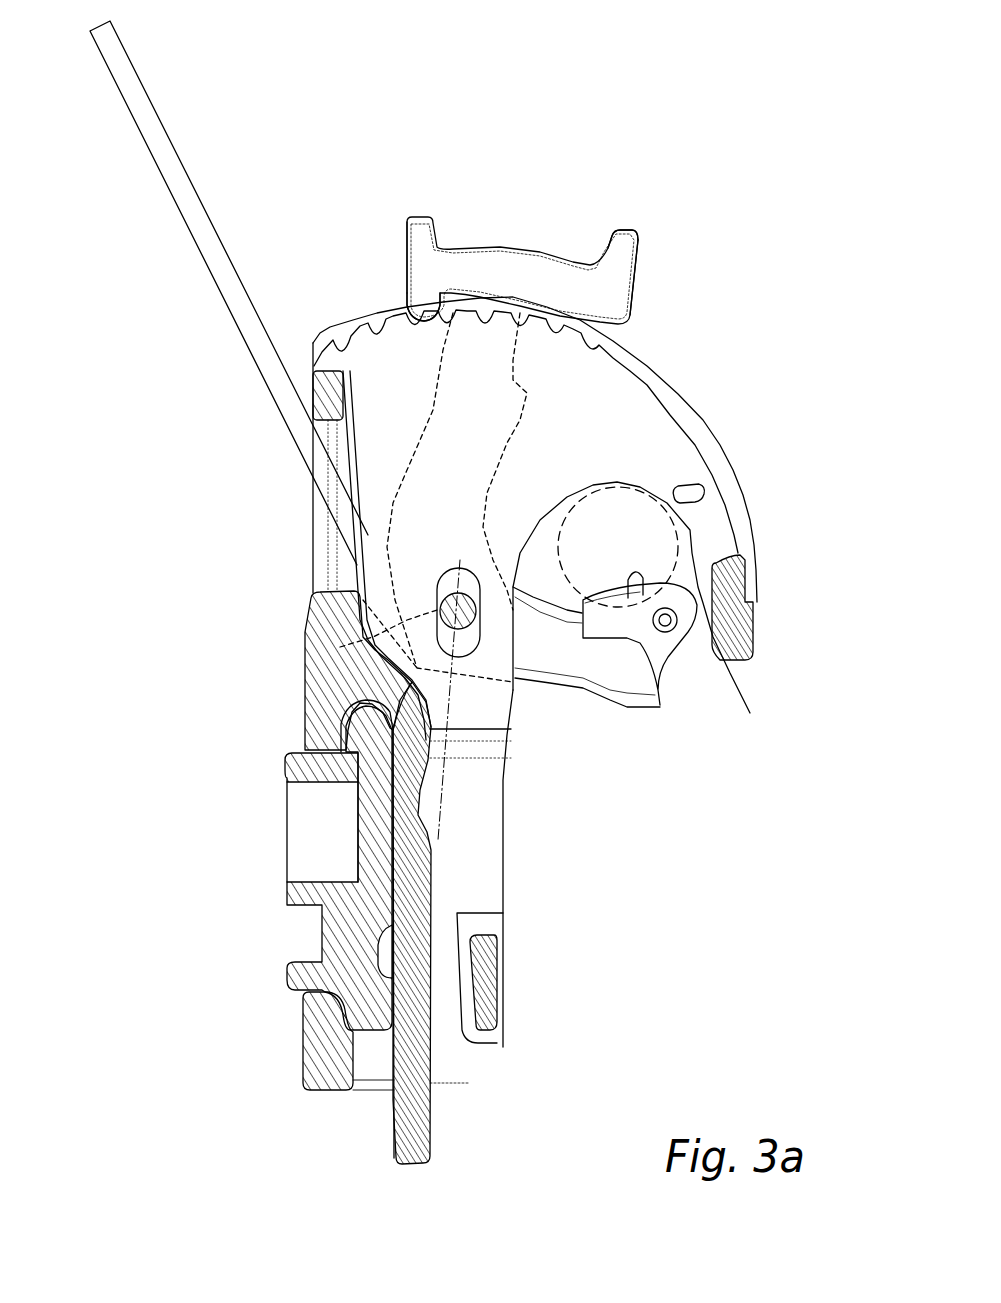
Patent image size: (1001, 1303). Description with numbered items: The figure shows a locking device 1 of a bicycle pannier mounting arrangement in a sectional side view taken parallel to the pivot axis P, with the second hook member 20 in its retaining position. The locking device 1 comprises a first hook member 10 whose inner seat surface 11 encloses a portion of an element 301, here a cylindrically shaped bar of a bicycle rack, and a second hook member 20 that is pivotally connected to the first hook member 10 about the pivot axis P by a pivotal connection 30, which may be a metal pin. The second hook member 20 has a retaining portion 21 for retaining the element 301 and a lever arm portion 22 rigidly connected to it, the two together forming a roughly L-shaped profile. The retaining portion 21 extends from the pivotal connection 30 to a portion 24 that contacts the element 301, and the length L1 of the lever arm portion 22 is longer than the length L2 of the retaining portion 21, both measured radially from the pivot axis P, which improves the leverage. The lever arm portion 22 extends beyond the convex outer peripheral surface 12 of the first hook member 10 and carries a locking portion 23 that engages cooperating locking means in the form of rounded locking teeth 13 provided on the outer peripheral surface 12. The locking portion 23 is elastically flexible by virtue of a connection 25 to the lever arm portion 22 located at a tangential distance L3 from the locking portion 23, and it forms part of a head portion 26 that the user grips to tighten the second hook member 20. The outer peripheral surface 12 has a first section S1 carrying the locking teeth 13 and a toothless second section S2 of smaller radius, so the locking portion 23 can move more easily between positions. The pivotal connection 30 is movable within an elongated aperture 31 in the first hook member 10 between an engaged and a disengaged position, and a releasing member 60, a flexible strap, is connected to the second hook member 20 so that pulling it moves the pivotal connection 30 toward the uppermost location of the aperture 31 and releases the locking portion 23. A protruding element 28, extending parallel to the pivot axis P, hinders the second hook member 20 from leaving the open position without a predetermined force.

The locking device 1 is at (675, 130).
The first hook member 10 is at (755, 653).
The inner seat surface 11 is at (740, 700).
The outer peripheral surface 12 is at (441, 292).
The locking teeth 13 is at (407, 307).
The second hook member 20 is at (535, 690).
The retaining portion 21 is at (641, 707).
The lever arm portion 22 is at (397, 507).
The locking portion 23 is at (405, 262).
The portion adapted to be in contact with the element 24 is at (648, 640).
The connection 25 is at (578, 263).
The head portion 26 is at (640, 262).
The protruding element 28 is at (704, 494).
The pivotal connection 30 is at (437, 592).
The element 301 is at (582, 568).
The aperture 31 is at (305, 718).
The releasing member 60 is at (178, 193).
The first section S1 is at (365, 333).
The second section S2 is at (707, 472).
The length of the lever arm portion L1 is at (410, 263).
The length of the retaining portion L2 is at (618, 565).
The distance L3 is at (575, 262).
The pivot axis P is at (363, 637).